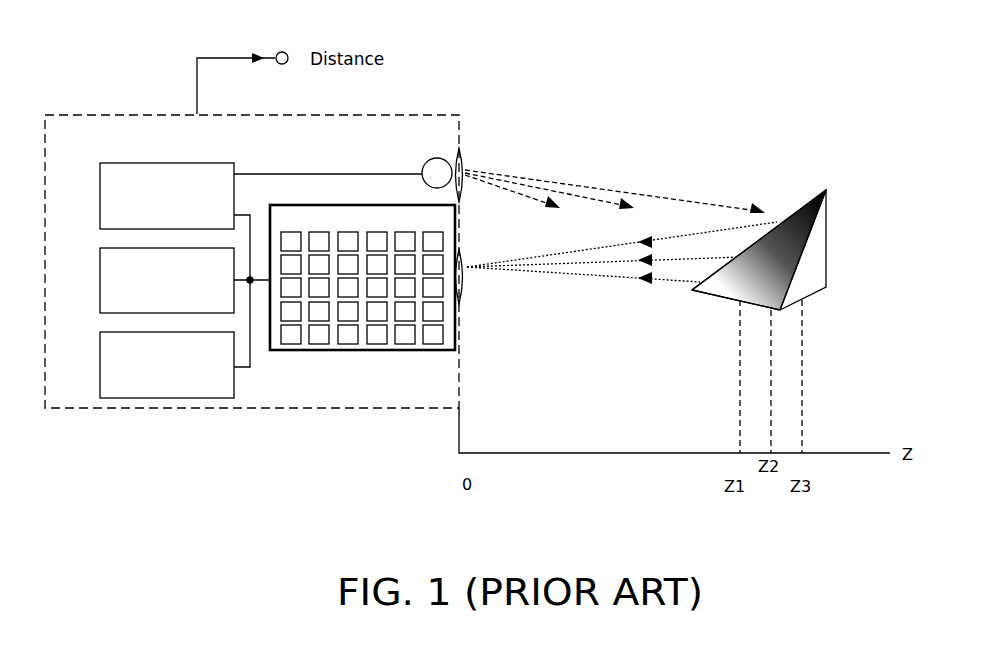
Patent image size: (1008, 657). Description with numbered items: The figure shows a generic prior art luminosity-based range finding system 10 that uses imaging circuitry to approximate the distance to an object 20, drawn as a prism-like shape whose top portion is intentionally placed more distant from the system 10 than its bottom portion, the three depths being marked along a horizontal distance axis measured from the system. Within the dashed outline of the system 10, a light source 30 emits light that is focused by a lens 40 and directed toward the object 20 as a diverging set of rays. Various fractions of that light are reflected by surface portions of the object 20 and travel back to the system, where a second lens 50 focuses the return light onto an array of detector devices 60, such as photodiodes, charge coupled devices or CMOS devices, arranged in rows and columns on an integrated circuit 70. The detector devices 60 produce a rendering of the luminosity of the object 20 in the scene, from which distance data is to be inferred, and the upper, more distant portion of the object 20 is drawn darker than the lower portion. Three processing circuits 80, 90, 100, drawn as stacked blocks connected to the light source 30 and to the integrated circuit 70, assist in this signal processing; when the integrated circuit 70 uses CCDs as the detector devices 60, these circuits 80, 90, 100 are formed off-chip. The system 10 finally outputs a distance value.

The system 10 is at (155, 75).
The object 20 is at (838, 210).
The light source 30 is at (420, 155).
The lens 40 is at (466, 158).
The lens 50 is at (466, 289).
The detector devices 60 is at (286, 337).
The integrated circuit 70 is at (318, 203).
The circuit 80 is at (173, 162).
The circuit 90 is at (100, 291).
The circuit 100 is at (100, 370).